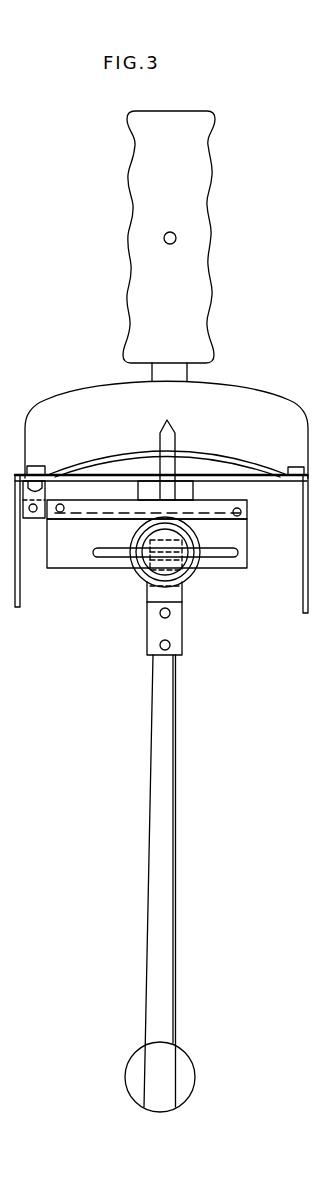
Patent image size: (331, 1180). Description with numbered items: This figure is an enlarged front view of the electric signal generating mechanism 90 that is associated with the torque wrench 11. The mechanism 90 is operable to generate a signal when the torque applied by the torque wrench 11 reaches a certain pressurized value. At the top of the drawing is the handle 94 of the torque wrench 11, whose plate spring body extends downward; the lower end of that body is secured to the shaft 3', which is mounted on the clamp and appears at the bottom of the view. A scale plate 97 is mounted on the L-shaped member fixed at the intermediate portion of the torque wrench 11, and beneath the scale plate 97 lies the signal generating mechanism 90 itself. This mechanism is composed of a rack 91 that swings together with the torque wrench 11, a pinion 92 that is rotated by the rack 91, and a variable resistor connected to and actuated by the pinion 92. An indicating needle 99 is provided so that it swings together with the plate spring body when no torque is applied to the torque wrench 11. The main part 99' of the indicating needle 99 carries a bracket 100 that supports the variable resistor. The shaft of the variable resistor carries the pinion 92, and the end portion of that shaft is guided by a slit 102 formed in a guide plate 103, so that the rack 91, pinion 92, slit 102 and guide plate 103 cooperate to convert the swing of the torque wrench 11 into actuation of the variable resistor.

The torque wrench 11 is at (211, 246).
The handle 94 is at (211, 277).
The scale plate 97 is at (248, 398).
The indicating needle 99 is at (194, 450).
The electric signal generating mechanism 90 is at (126, 586).
The rack 91 is at (212, 508).
The guide plate 103 is at (242, 533).
The slit 102 is at (230, 555).
The pinion 92 is at (197, 570).
The bracket 100 is at (177, 635).
The main part of the indicating needle 99' is at (197, 881).
The shaft 3' is at (193, 1077).